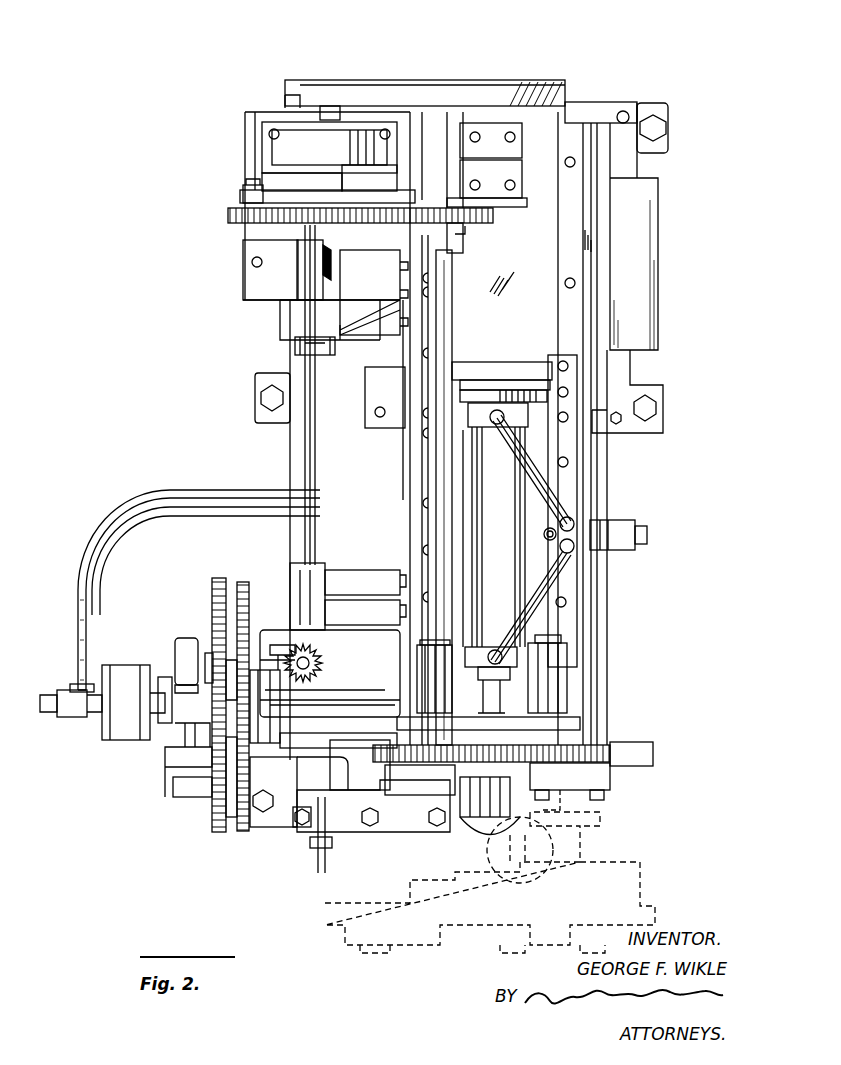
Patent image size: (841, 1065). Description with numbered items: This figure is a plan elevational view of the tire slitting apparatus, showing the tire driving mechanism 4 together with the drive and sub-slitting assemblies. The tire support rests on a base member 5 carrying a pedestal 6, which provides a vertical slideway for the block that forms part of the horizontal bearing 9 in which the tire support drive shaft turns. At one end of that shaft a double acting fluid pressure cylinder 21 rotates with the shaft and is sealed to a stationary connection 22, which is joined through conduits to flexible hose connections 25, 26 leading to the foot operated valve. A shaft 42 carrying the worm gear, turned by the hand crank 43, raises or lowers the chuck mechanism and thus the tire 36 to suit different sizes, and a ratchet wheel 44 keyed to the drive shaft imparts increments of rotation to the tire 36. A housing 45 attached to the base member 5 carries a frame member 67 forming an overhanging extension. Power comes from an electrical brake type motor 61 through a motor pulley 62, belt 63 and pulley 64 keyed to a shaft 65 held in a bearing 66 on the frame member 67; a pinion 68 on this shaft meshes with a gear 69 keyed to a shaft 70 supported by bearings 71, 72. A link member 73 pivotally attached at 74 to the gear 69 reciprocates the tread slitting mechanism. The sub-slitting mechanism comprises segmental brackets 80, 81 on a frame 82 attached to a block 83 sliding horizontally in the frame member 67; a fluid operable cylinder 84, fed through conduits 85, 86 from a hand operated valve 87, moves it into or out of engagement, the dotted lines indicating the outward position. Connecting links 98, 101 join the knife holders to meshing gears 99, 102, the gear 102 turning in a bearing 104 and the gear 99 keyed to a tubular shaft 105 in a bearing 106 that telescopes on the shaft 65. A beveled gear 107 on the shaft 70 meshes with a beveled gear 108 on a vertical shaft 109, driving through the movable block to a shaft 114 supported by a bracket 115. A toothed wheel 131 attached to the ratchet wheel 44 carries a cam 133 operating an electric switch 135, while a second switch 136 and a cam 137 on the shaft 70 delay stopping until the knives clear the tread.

The tire driving mechanism 4 is at (161, 626).
The base member 5 is at (650, 106).
The pedestal 6 is at (367, 797).
The horizontal bearing 9 is at (285, 706).
The double acting fluid pressure cylinder 21 is at (117, 727).
The stationary connection 22 is at (82, 704).
The flexible hose connection 25 is at (192, 512).
The flexible hose connection 26 is at (200, 492).
The tire 36 is at (528, 869).
The shaft 42 is at (290, 830).
The hand crank 43 is at (318, 856).
The ratchet wheel 44 is at (238, 837).
The housing 45 is at (607, 104).
The electrical brake type motor 61 is at (277, 150).
The motor pulley 62 is at (300, 82).
The belt 63 is at (368, 92).
The pulley 64 is at (468, 82).
The shaft 65 is at (455, 253).
The bearing 66 is at (512, 204).
The frame member 67 is at (584, 457).
The pinion 68 is at (466, 232).
The gear 69 is at (228, 215).
The shaft 70 is at (305, 450).
The bearing 71 is at (310, 250).
The bearing 72 is at (290, 573).
The link member 73 is at (262, 197).
The pivotal attachment 74 is at (250, 185).
The segmental bracket 80 is at (351, 756).
The segmental bracket 81 is at (653, 763).
The frame 82 is at (580, 726).
The block 83 is at (502, 362).
The fluid operable cylinder 84 is at (495, 558).
The conduit 85 is at (552, 491).
The conduit 86 is at (548, 590).
The hand operated valve 87 is at (607, 548).
The connecting link 98 is at (395, 770).
The gear 99 is at (405, 770).
The connecting link 101 is at (575, 790).
The gear 102 is at (612, 766).
The bearing 104 is at (553, 684).
The shaft 105 is at (453, 324).
The bearing 106 is at (425, 693).
The beveled gear 107 is at (273, 640).
The beveled gear 108 is at (330, 655).
The vertical shaft 109 is at (321, 663).
The shaft 114 is at (190, 644).
The bracket 115 is at (139, 670).
The toothed wheel 131 is at (215, 834).
The cam 133 is at (188, 785).
The electric switch 135 is at (175, 763).
The second switch 136 is at (348, 340).
The cam 137 is at (298, 347).